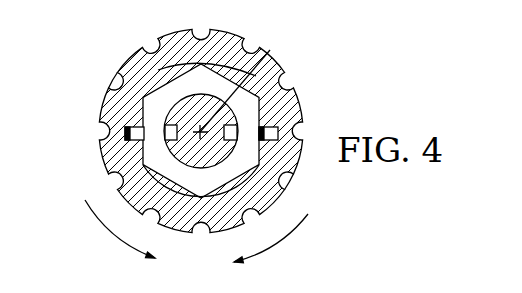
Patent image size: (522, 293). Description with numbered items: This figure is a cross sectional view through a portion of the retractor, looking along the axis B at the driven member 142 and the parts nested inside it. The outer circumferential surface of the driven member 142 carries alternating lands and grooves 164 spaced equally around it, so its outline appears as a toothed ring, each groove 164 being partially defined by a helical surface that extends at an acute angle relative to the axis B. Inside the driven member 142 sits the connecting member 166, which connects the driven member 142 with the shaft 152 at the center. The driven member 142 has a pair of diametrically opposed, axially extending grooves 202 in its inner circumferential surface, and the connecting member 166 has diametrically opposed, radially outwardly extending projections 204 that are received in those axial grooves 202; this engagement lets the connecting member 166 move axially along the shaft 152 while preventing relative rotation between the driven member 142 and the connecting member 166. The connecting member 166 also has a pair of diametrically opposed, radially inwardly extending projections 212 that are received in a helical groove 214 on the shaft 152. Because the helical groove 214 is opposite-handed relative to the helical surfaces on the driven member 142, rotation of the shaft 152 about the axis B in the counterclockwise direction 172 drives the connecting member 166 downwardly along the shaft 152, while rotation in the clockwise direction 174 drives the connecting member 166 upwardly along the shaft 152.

The driven member 142 is at (118, 53).
The shaft 152 is at (234, 40).
The groove 164 is at (287, 178).
The connecting member 166 is at (146, 110).
The axis B is at (256, 76).
The axially extending groove 202 is at (123, 124).
The radially outwardly extending projection 204 is at (278, 128).
The radially inwardly extending projection 212 is at (170, 111).
The helical groove 214 is at (247, 124).
The counterclockwise direction 172 is at (117, 236).
The clockwise direction 174 is at (274, 246).